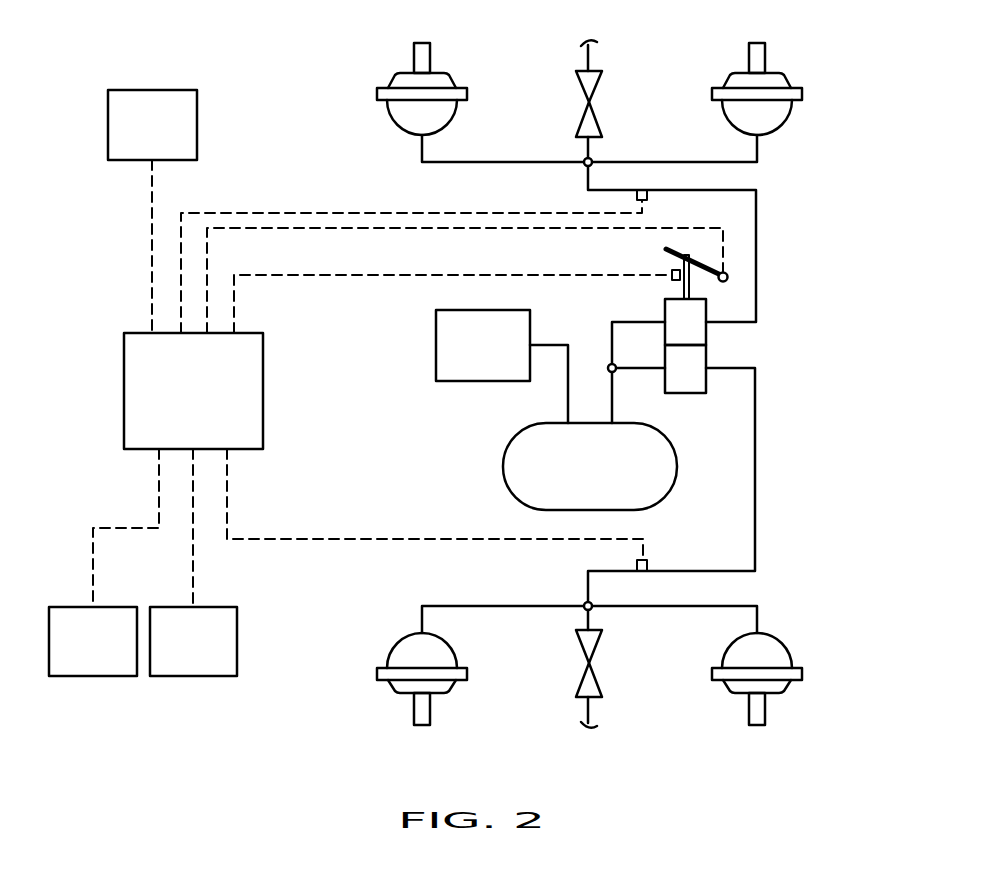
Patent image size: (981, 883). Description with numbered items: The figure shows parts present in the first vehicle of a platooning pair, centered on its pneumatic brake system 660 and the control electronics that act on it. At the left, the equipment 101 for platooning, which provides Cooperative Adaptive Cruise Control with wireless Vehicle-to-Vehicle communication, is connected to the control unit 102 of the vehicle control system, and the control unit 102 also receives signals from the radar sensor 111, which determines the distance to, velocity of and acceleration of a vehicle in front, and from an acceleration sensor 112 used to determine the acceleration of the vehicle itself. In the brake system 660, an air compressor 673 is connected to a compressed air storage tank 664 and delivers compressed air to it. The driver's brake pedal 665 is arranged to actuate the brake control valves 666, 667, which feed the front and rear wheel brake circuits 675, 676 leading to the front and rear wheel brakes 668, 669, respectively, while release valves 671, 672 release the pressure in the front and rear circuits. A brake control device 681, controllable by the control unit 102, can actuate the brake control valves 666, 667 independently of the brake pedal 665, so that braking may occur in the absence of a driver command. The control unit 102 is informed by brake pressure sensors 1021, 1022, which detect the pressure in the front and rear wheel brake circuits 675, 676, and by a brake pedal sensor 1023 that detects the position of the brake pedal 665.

The equipment for platooning 101 is at (152, 90).
The control unit 102 is at (124, 390).
The radar sensor 111 is at (190, 676).
The acceleration sensor 112 is at (88, 676).
The pneumatic brake system 660 is at (828, 361).
The compressed air storage tank 664 is at (503, 465).
The brake pedal 665 is at (705, 258).
The brake control valve 666 is at (706, 308).
The brake control valve 667 is at (706, 383).
The front wheel brakes 668 is at (395, 125).
The rear wheel brakes 669 is at (393, 645).
The release valve 671 is at (602, 85).
The release valve 672 is at (602, 678).
The air compressor 673 is at (436, 345).
The front wheel brake circuit 675 is at (540, 162).
The rear wheel brake circuit 676 is at (540, 606).
The brake control device 681 is at (672, 280).
The brake pressure sensor 1021 is at (647, 196).
The brake pressure sensor 1022 is at (647, 567).
The brake pedal sensor 1023 is at (727, 277).